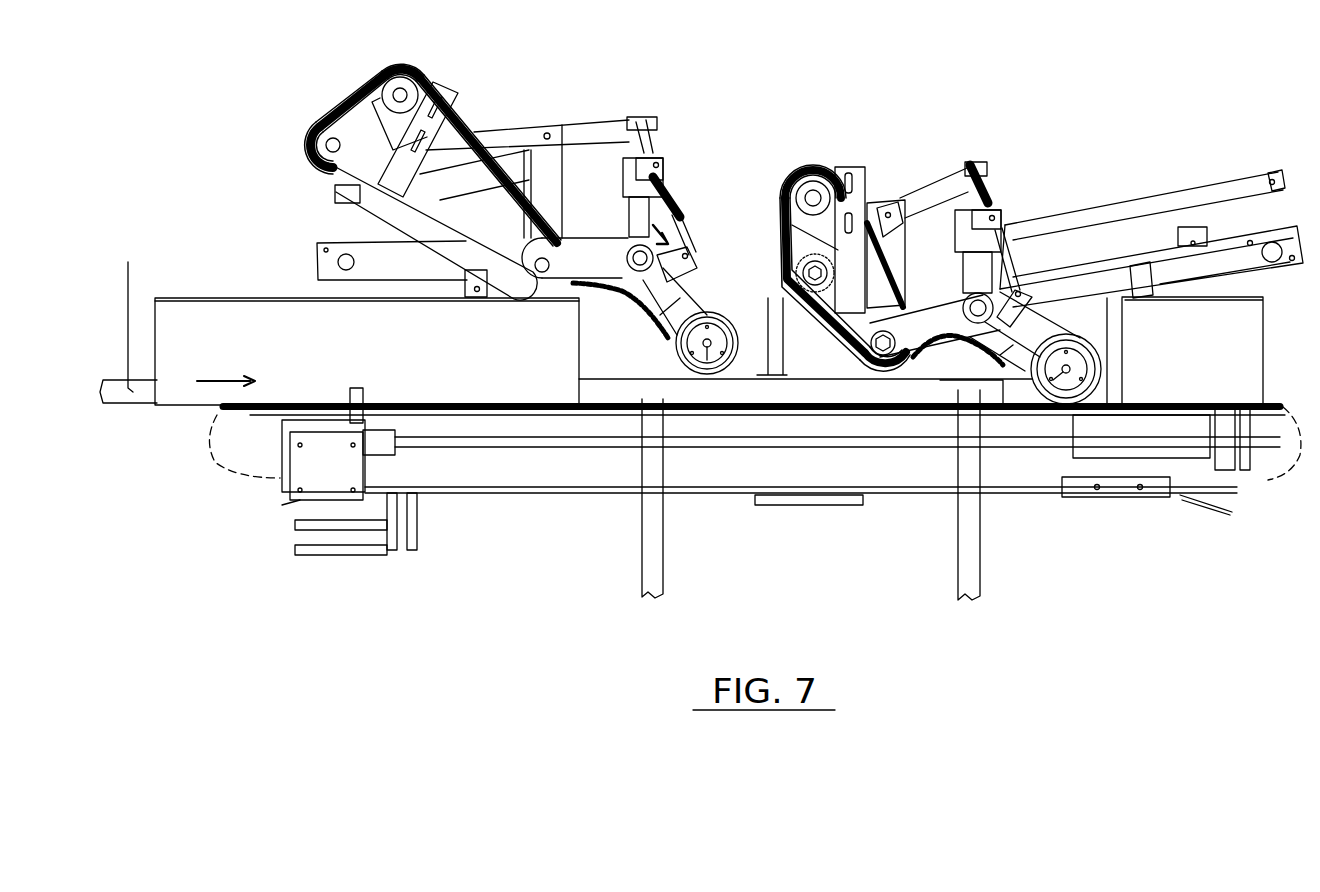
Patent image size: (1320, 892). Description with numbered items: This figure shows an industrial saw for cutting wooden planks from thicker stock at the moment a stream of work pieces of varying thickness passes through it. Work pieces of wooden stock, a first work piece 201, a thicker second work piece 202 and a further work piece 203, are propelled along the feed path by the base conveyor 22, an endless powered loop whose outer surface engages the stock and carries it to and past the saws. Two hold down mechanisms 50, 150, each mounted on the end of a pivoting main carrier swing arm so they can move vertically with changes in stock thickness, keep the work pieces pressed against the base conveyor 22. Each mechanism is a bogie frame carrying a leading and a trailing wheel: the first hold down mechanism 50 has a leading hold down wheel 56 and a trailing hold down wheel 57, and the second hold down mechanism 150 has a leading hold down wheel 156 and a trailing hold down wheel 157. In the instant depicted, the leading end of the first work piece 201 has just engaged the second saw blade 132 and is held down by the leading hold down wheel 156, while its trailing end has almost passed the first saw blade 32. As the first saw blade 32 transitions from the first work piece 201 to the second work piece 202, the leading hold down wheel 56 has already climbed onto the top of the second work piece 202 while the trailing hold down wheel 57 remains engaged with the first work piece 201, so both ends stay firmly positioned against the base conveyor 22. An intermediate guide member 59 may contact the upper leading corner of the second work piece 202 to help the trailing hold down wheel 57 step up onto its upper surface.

The base conveyor 22 is at (218, 466).
The saw blade 32 is at (650, 523).
The hold down mechanism 50 is at (530, 200).
The leading hold down wheel 56 is at (533, 298).
The trailing hold down wheel 57 is at (722, 316).
The intermediate guide member 59 is at (611, 306).
The second saw blade 132 is at (972, 545).
The second hold down mechanism 150 is at (1041, 335).
The leading hold down wheel 156 is at (890, 375).
The trailing hold down wheel 157 is at (1068, 372).
The first work piece 201 is at (612, 393).
The second work piece 202 is at (262, 335).
The work piece 203 is at (128, 262).